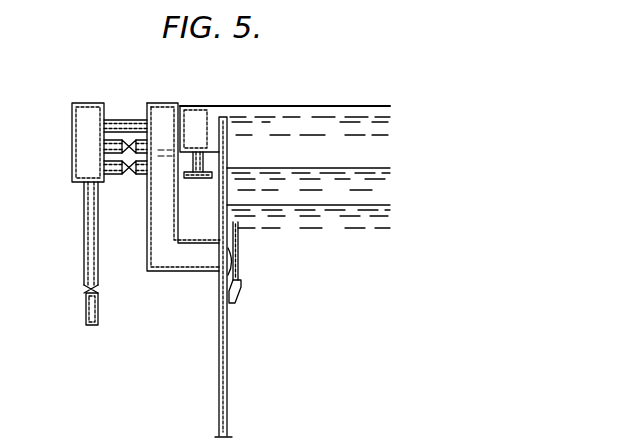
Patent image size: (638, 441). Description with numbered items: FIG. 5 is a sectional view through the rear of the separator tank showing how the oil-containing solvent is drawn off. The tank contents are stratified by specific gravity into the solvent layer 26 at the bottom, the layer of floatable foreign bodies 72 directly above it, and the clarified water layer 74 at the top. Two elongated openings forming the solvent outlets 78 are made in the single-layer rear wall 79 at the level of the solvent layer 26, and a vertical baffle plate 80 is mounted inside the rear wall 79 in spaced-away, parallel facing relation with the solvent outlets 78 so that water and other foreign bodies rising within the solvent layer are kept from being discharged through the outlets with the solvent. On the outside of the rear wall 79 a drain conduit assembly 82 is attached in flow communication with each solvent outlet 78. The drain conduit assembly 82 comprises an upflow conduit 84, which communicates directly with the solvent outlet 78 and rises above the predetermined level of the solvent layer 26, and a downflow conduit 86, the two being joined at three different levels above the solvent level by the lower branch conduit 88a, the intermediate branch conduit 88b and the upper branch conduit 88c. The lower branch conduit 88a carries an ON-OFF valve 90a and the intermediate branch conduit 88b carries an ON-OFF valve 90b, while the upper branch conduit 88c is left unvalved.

The solvent layer 26 is at (368, 256).
The layer of floatable foreign bodies 72 is at (330, 203).
The clarified water layer 74 is at (330, 166).
The solvent outlet 78 is at (226, 273).
The rear wall 79 is at (229, 358).
The baffle plate 80 is at (238, 252).
The drain conduit assembly 82 is at (102, 97).
The upflow conduit 84 is at (165, 220).
The downflow conduit 86 is at (88, 141).
The lower branch conduit 88a is at (142, 172).
The intermediate branch conduit 88b is at (150, 148).
The upper branch conduit 88c is at (134, 122).
The ON-OFF valve 90a is at (127, 170).
The ON-OFF valve 90b is at (127, 140).